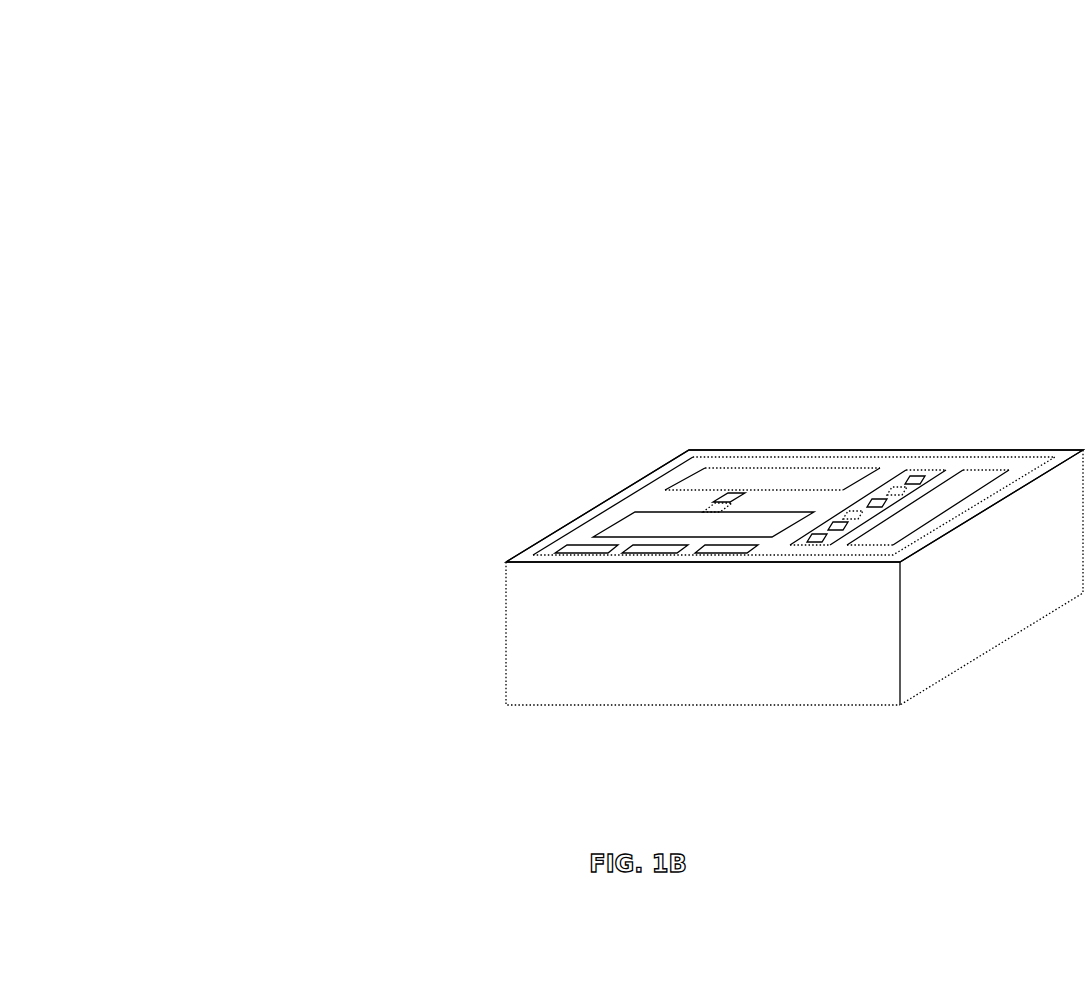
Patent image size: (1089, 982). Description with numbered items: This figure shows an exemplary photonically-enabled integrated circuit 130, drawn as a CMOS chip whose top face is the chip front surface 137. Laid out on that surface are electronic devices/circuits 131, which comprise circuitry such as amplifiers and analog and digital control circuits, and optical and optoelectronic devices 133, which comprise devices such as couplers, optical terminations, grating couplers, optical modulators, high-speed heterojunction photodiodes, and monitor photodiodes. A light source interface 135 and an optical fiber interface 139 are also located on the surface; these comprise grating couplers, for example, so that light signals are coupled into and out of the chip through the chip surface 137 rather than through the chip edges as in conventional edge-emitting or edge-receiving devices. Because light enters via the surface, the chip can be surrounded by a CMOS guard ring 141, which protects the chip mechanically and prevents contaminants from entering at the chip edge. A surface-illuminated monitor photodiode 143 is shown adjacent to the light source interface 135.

The photonically-enabled integrated circuit 130 is at (350, 178).
The electronic devices/circuits 131 is at (748, 554).
The optical and optoelectronic devices 133 is at (488, 547).
The light source interface 135 is at (725, 496).
The chip front surface 137 is at (832, 457).
The optical fiber interface 139 is at (925, 470).
The CMOS guard ring 141 is at (1014, 598).
The surface-illuminated monitor photodiode 143 is at (711, 505).